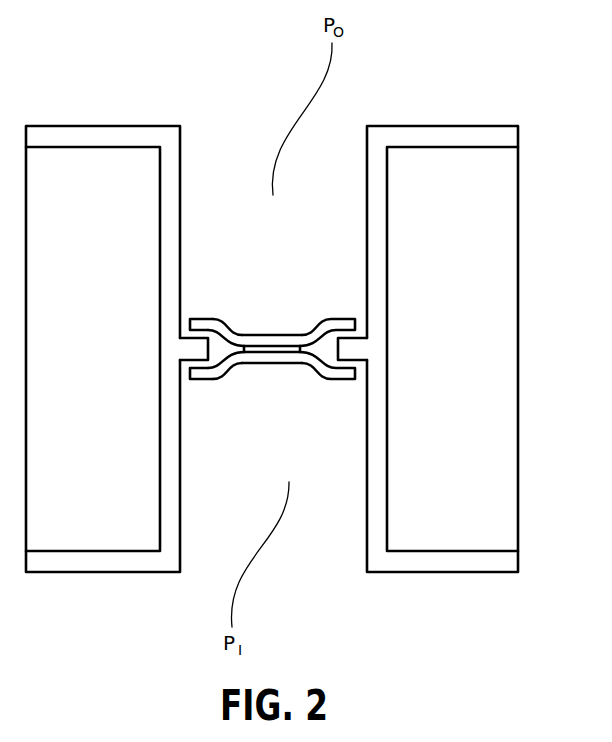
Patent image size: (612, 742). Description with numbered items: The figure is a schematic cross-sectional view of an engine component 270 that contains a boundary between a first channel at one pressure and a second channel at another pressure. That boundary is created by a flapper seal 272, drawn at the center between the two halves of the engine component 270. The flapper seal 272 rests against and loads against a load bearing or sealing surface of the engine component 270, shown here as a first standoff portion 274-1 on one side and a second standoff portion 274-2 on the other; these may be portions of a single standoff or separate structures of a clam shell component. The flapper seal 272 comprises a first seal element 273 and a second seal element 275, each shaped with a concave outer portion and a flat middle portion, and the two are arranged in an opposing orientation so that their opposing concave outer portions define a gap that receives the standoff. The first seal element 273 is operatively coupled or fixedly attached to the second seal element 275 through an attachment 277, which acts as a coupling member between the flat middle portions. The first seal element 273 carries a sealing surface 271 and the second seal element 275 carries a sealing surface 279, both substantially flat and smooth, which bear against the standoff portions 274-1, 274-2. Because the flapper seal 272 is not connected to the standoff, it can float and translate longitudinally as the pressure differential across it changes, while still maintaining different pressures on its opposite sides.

The engine component 270 is at (437, 126).
The first standoff portion 274-1 is at (353, 348).
The second standoff portion 274-2 is at (185, 346).
The sealing surface 279 is at (197, 327).
The sealing surface 271 is at (197, 371).
The second seal element 275 is at (204, 321).
The attachment 277 is at (258, 347).
The first seal element 273 is at (204, 376).
The flapper seal 272 is at (257, 363).